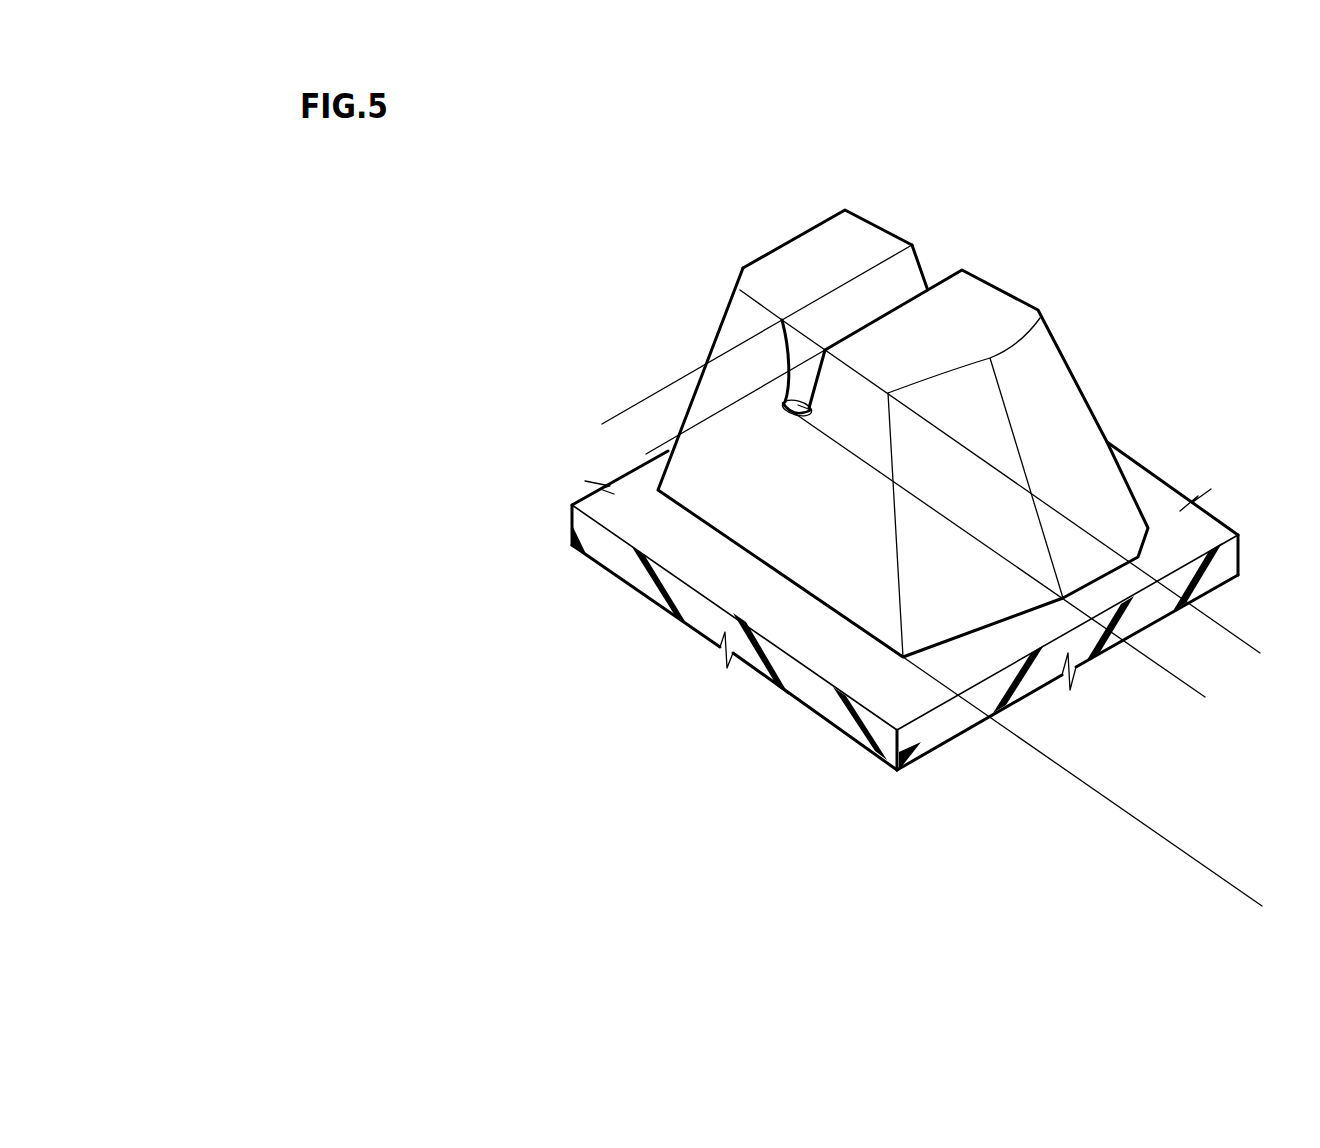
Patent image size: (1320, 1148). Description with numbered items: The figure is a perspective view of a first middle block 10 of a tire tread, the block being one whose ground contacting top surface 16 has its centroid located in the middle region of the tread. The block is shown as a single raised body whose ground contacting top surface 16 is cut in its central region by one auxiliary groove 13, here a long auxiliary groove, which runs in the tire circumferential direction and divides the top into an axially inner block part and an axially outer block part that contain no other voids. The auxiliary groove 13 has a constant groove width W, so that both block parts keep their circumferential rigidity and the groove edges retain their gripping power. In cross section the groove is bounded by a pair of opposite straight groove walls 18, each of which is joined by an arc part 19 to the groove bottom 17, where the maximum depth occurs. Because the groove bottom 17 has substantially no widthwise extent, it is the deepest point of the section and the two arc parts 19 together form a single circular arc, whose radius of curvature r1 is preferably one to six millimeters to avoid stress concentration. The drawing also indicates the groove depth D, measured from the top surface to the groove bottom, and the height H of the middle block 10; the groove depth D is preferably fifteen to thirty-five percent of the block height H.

The middle block 10 is at (1030, 290).
The auxiliary groove 13 is at (887, 460).
The ground contacting top surface 16 is at (850, 246).
The groove bottom 17 is at (786, 402).
The groove wall 18 is at (815, 326).
The arc part 19 is at (804, 402).
The radius of curvature r1 is at (798, 405).
The groove width W is at (651, 451).
The groove depth D is at (1195, 608).
The height of the middle block H is at (1252, 648).